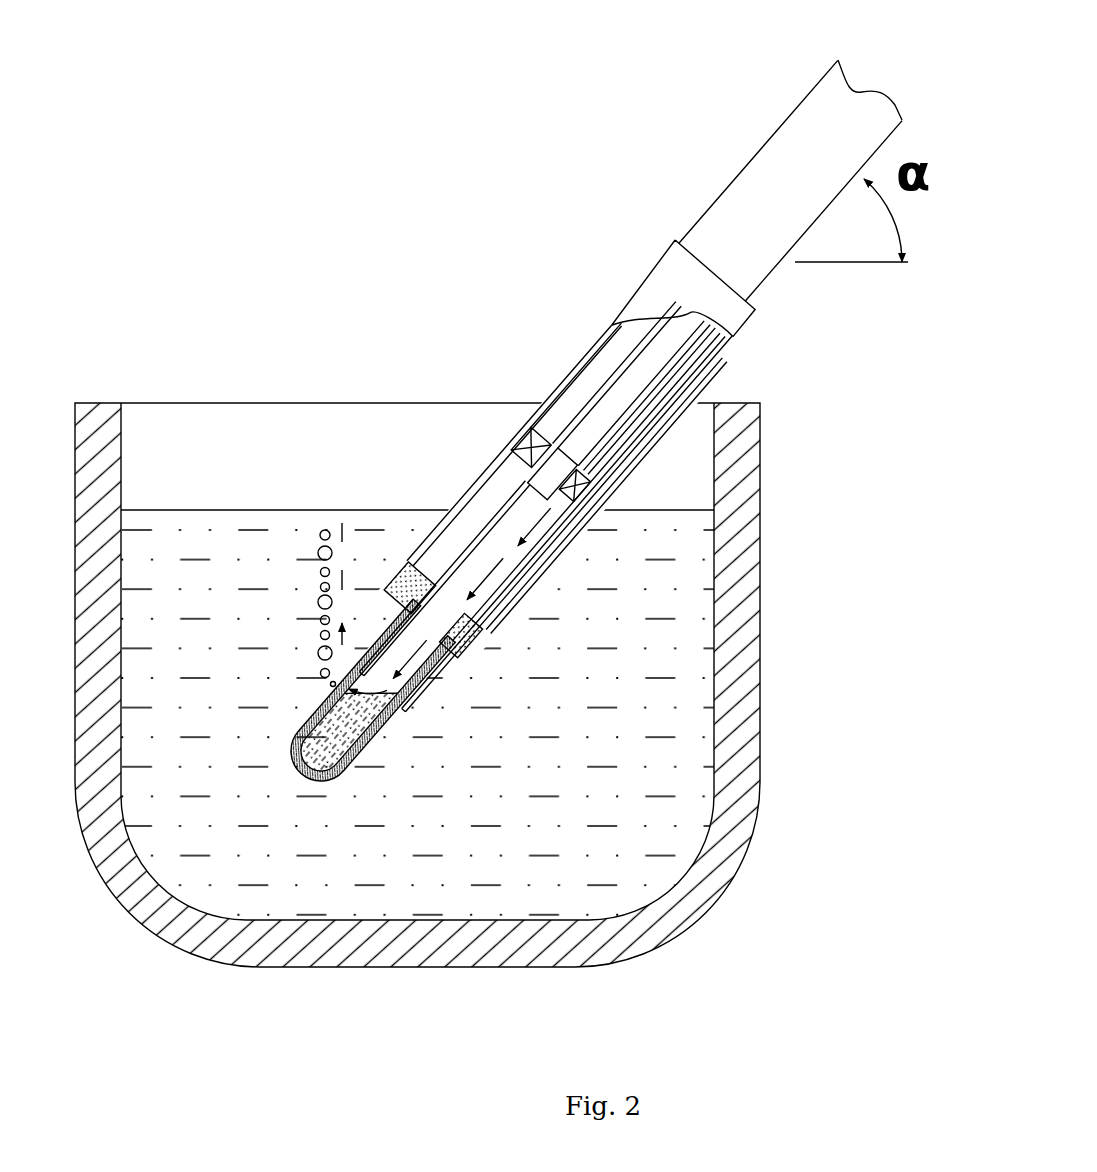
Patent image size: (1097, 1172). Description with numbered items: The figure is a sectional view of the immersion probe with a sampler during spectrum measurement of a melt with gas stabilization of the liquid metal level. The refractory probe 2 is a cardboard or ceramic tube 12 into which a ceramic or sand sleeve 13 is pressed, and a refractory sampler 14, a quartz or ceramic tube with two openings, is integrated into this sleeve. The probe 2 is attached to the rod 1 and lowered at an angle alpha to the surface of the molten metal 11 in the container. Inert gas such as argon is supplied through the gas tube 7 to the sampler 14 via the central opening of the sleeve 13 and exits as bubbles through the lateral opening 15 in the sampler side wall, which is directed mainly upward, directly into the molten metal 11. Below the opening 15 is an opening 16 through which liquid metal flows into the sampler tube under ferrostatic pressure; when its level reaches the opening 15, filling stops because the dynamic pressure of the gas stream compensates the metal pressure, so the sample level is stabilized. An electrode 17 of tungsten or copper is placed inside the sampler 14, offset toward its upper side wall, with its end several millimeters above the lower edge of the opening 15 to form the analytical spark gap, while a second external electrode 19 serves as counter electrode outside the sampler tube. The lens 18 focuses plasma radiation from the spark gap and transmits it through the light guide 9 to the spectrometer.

The rod 1 is at (793, 175).
The refractory probe 2 is at (669, 292).
The gas tube 7 is at (640, 398).
The light guide 9 is at (630, 380).
The molten metal 11 is at (693, 640).
The cardboard or ceramic tube 12 is at (500, 447).
The ceramic or sand sleeve 13 is at (415, 587).
The refractory sampler 14 is at (363, 605).
The opening 15 is at (334, 678).
The opening 16 is at (355, 765).
The electrode 17 is at (383, 592).
The lens 18 is at (558, 470).
The second external electrode 19 is at (432, 675).